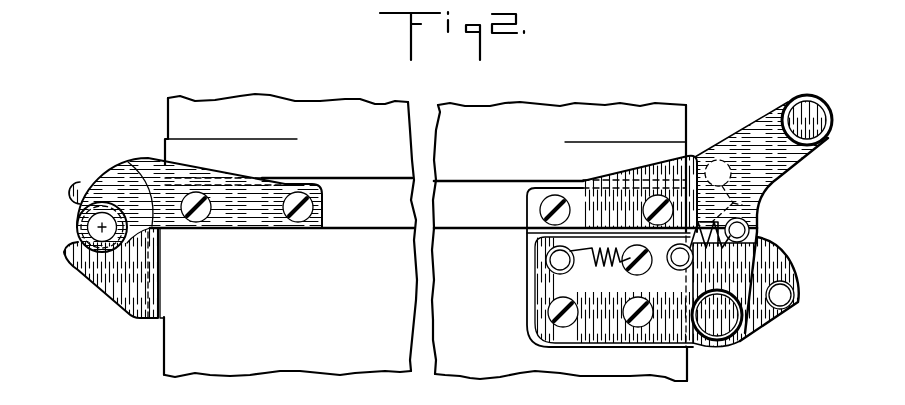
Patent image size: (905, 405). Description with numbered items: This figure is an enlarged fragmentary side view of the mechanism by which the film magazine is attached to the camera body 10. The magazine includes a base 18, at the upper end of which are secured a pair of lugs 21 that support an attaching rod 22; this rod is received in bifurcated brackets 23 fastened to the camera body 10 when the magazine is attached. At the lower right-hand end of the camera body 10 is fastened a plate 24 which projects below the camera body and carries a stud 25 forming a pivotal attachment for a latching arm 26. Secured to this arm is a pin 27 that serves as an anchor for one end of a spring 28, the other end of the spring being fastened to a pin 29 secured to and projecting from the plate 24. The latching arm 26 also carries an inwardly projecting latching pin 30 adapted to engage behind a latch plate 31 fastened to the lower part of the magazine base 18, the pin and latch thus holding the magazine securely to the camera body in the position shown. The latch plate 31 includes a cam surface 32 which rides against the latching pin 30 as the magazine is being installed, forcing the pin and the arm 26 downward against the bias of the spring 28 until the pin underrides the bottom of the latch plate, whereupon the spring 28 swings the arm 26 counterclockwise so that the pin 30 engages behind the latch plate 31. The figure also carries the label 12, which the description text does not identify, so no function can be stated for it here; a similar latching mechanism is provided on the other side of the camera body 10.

The camera body 10 is at (689, 377).
The pivot pin 12 is at (797, 303).
The base 18 is at (345, 200).
The lugs 21 is at (135, 170).
The attaching rod 22 is at (101, 230).
The bifurcated brackets 23 is at (78, 182).
The plate 24 is at (695, 345).
The stud 25 is at (732, 320).
The latching arm 26 is at (778, 173).
The pin 27 is at (750, 231).
The spring 28 is at (601, 268).
The pin 29 is at (546, 260).
The latching pin 30 is at (722, 160).
The latch plate 31 is at (616, 200).
The cam surface 32 is at (742, 205).